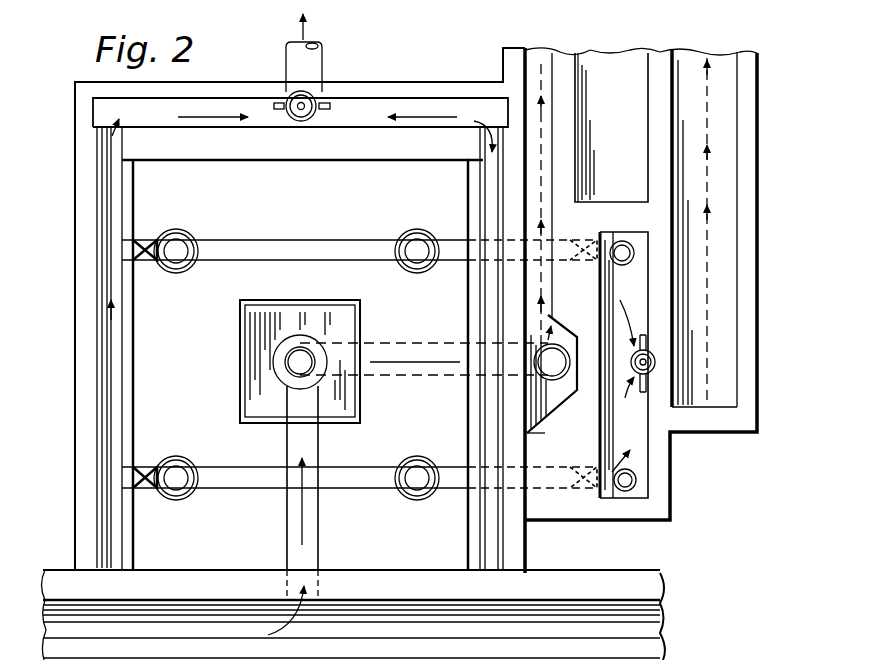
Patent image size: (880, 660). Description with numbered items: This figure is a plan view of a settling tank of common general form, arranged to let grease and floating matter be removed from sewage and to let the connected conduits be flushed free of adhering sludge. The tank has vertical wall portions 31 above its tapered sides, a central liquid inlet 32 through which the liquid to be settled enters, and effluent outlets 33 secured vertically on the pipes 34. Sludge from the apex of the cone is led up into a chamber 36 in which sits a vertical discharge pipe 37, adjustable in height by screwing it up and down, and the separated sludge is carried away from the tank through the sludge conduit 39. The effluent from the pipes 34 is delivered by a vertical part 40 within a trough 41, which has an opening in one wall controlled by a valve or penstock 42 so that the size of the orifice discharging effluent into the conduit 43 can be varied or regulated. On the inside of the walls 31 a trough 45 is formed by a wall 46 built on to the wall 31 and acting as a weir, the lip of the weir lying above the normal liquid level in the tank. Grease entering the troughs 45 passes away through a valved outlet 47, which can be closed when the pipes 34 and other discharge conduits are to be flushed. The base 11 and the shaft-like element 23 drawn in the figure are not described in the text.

The base 11 is at (380, 615).
The shaft 23 is at (313, 533).
The vertical wall portion 31 is at (508, 190).
The central liquid inlet 32 is at (337, 405).
The effluent outlet 33 is at (170, 270).
The pipe 34 is at (230, 251).
The chamber 36 is at (580, 397).
The vertical discharge pipe 37 is at (543, 326).
The sludge conduit 39 is at (557, 189).
The vertical part 40 is at (635, 253).
The trough 41 is at (628, 306).
The valve or penstock 42 is at (655, 358).
The effluent conduit 43 is at (712, 100).
The grease trough 45 is at (115, 536).
The weir wall 46 is at (135, 383).
The valved outlet 47 is at (320, 97).